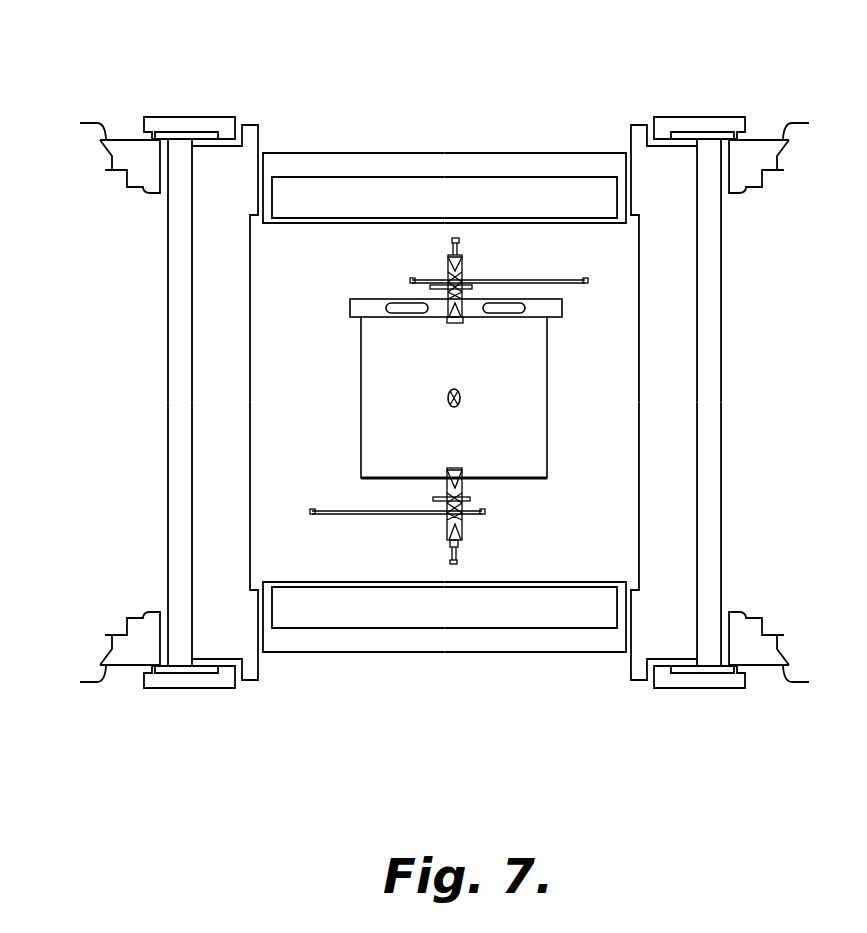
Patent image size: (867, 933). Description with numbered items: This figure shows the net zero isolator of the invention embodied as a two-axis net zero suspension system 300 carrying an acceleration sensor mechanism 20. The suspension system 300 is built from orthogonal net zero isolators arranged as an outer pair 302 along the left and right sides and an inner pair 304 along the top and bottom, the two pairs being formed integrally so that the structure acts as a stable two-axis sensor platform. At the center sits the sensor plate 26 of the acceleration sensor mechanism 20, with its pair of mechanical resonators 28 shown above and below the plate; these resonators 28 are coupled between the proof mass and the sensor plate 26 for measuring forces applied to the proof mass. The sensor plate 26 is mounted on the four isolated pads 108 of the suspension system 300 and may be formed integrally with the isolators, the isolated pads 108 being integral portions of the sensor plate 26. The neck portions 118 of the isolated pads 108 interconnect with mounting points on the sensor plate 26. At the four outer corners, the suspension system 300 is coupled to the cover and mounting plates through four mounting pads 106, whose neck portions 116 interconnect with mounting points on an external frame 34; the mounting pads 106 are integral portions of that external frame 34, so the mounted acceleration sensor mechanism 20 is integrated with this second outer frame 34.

The acceleration sensor mechanism 20 is at (232, 477).
The sensor plate 26 is at (491, 222).
The mechanical resonators 28 is at (440, 265).
The external frame 34 is at (105, 170).
The mounting pads 106 is at (97, 124).
The isolated pads 108 is at (250, 235).
The neck portions 116 is at (134, 128).
The neck portions 118 is at (283, 219).
The two-axis net zero suspension system 300 is at (693, 65).
The outer pair of net zero isolators 302 is at (168, 378).
The inner pair of net zero isolators 304 is at (437, 152).